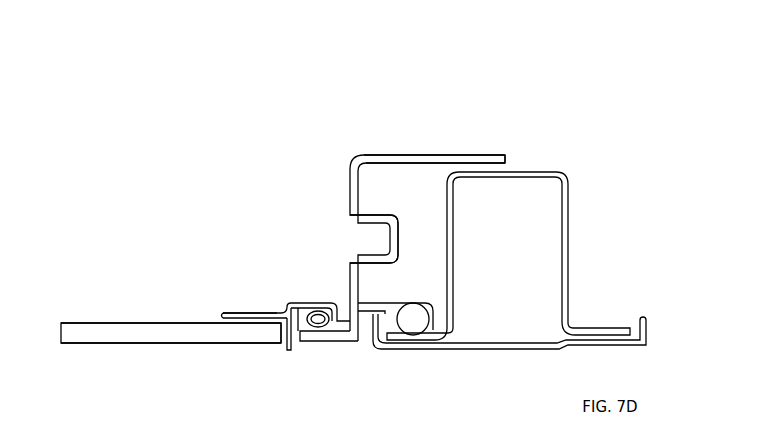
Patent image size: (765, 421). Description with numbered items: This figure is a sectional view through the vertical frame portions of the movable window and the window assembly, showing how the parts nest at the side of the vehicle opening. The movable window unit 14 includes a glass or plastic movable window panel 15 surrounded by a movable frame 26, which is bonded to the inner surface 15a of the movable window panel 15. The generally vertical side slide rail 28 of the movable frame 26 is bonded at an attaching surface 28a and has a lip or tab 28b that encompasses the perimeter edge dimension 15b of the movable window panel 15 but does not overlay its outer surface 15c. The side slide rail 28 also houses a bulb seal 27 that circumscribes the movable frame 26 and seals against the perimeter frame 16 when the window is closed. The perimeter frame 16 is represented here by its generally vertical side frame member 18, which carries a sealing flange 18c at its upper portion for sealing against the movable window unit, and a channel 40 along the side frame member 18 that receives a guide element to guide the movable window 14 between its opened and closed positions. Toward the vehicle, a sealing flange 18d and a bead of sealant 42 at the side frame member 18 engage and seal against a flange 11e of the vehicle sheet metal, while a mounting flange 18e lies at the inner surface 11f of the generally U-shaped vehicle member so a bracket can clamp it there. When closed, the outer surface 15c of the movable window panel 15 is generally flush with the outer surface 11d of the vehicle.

The outer surface of the transit vehicle 11d is at (448, 346).
The flange of the vehicle sheet metal 11e is at (429, 339).
The inner surface of the vehicle sheet metal 11f is at (541, 172).
The movable window unit 14 is at (170, 290).
The movable window panel 15 is at (147, 334).
The inner surface of the movable window panel 15a is at (113, 323).
The perimeter edge dimension of the movable window panel 15b is at (275, 344).
The outer surface of the movable window panel 15c is at (99, 344).
The perimeter frame 16 is at (300, 88).
The side frame member 18 is at (347, 184).
The sealing flange 18c is at (339, 338).
The sealing flange 18d is at (390, 336).
The mounting flange 18e is at (437, 151).
The movable frame 26 is at (251, 262).
The bulb seal 27 is at (318, 306).
The side slide rail 28 is at (291, 300).
The attaching surface 28a is at (250, 322).
The lip or tab 28b is at (287, 352).
The channel 40 is at (362, 245).
The bead of sealant 42 is at (423, 323).